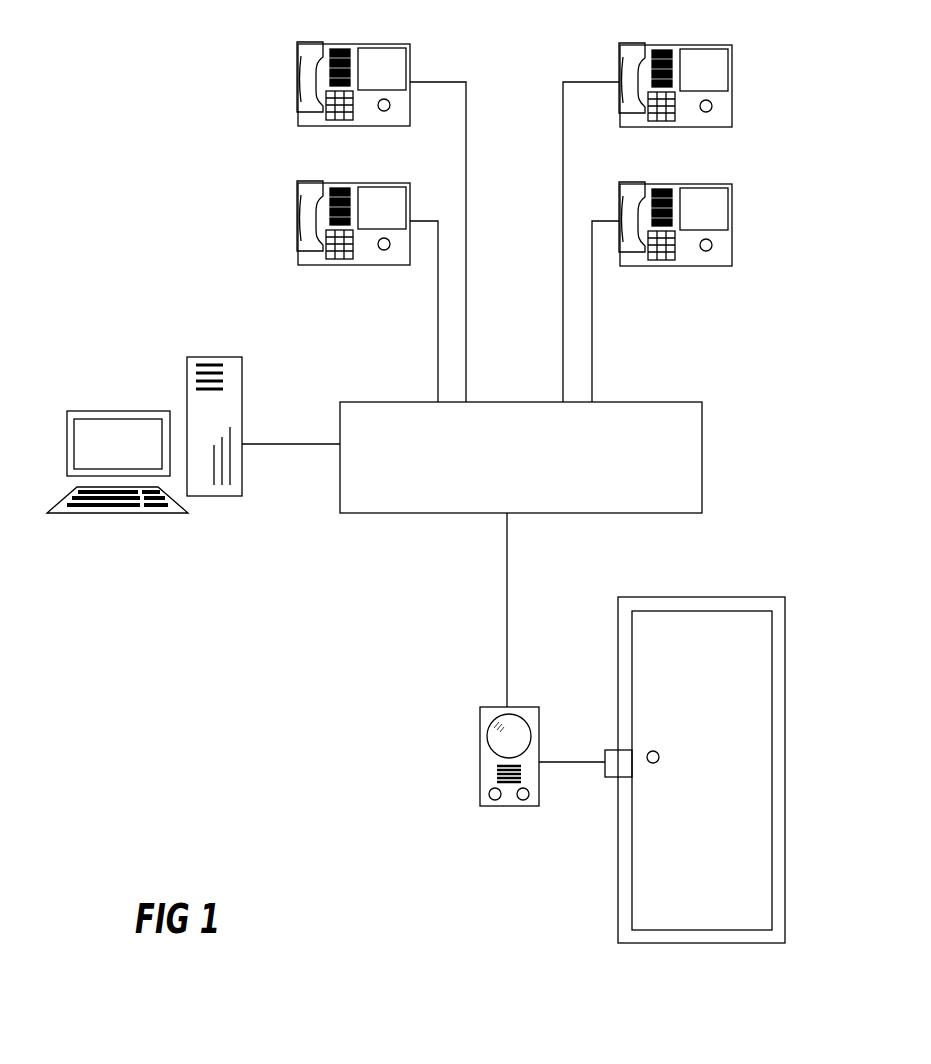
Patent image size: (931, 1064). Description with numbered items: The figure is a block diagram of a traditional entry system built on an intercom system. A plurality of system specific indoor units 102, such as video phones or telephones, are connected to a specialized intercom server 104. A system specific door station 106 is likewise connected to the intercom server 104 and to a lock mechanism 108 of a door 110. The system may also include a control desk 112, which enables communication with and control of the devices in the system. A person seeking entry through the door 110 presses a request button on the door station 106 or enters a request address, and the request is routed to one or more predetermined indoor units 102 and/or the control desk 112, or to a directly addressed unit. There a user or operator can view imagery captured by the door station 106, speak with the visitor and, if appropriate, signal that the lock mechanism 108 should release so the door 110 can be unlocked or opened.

The indoor units 102 is at (297, 97).
The intercom server 104 is at (689, 440).
The door station 106 is at (487, 770).
The lock mechanism 108 is at (605, 750).
The door 110 is at (648, 879).
The control desk 112 is at (227, 538).